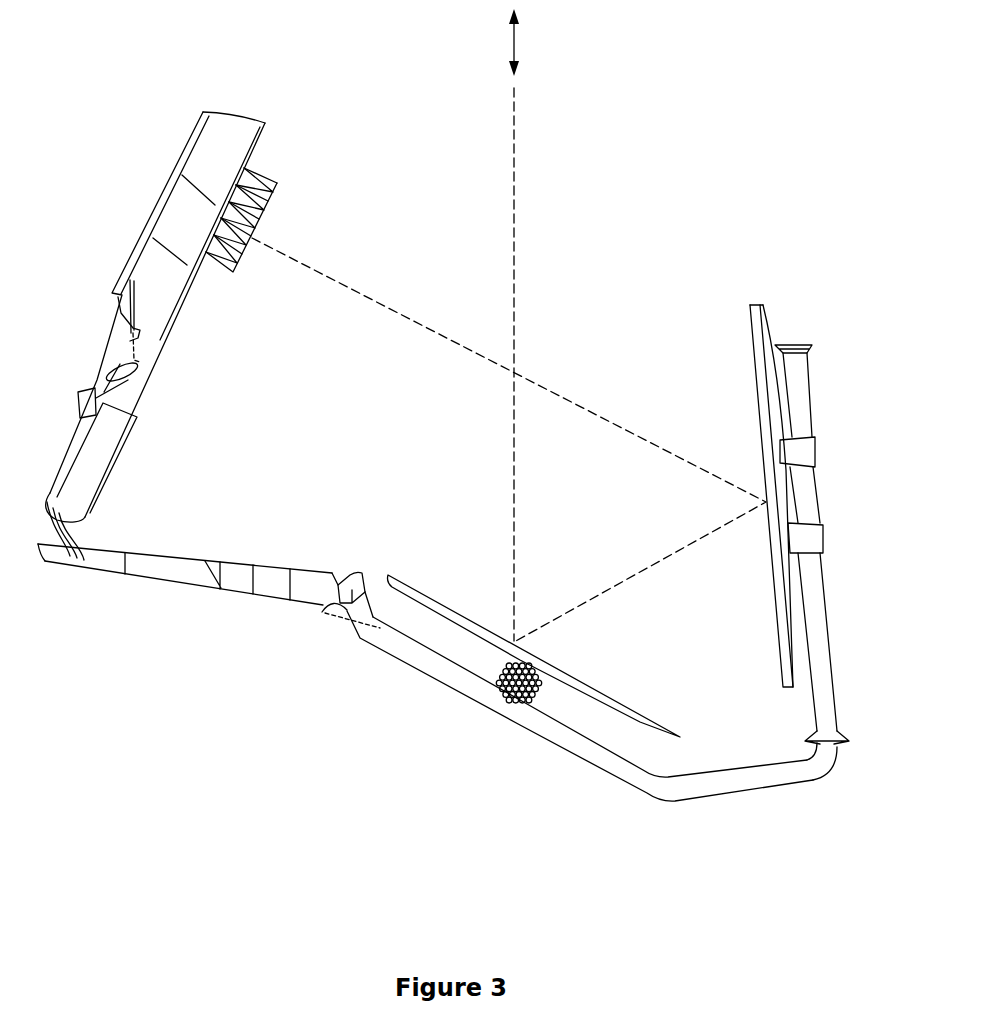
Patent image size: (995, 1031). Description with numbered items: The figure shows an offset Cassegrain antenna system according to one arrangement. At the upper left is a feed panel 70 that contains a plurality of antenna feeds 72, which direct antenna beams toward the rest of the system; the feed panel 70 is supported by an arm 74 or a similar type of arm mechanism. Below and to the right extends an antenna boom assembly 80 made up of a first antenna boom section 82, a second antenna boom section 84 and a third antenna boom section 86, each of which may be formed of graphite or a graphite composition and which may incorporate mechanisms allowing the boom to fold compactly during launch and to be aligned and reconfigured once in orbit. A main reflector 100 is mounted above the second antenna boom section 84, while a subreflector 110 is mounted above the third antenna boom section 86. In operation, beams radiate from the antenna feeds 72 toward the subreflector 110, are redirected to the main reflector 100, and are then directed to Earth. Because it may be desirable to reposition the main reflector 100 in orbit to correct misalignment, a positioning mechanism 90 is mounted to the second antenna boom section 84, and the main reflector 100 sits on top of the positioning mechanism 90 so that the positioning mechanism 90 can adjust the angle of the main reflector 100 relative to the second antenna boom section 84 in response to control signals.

The feed panel 70 is at (243, 87).
The antenna feeds 72 is at (296, 217).
The arm 74 is at (122, 318).
The antenna boom assembly 80 is at (336, 768).
The first antenna boom section 82 is at (265, 592).
The second antenna boom section 84 is at (502, 713).
The third antenna boom section 86 is at (827, 622).
The positioning mechanism 90 is at (537, 693).
The main reflector 100 is at (643, 683).
The subreflector 110 is at (716, 330).